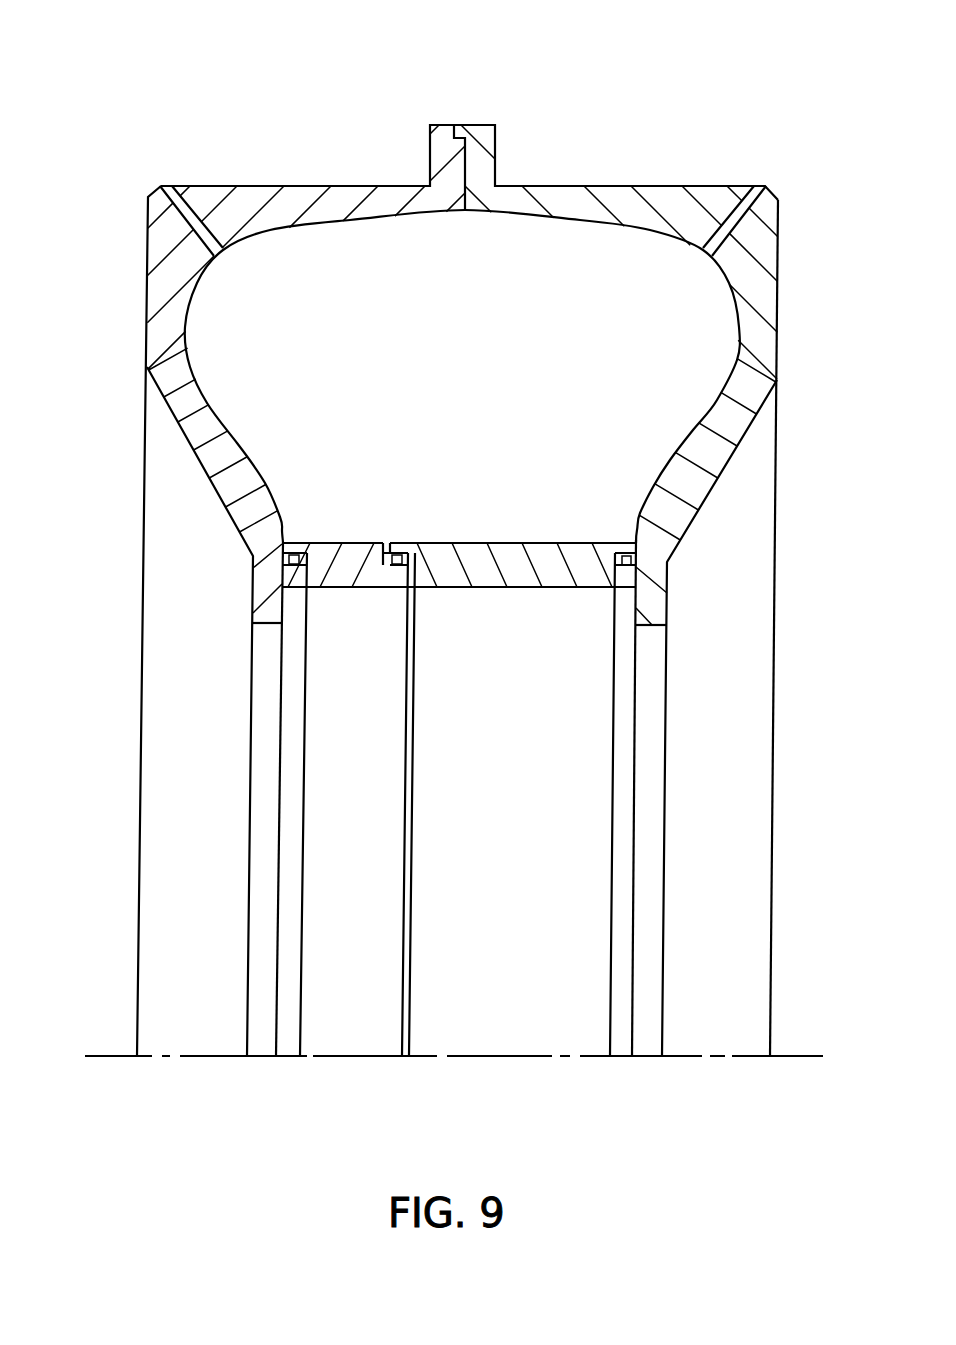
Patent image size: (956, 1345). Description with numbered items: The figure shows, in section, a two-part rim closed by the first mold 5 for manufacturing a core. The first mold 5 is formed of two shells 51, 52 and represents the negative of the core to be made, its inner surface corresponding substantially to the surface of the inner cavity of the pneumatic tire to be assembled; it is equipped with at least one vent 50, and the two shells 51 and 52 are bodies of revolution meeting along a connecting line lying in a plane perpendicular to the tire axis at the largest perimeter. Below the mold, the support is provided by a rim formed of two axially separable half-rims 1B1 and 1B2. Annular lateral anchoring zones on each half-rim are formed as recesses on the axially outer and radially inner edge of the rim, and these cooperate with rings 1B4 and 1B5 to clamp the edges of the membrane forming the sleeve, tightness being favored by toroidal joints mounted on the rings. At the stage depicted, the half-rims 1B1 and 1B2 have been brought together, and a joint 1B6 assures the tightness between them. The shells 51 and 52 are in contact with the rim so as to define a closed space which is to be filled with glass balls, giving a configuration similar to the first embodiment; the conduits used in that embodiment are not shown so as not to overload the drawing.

The first mold 5 is at (514, 98).
The vent 50 is at (165, 193).
The shell 51 is at (158, 289).
The shell 52 is at (758, 293).
The half-rim 1B1 is at (363, 1040).
The half-rim 1B2 is at (517, 1033).
The ring 1B4 is at (292, 1042).
The ring 1B5 is at (622, 1040).
The joint 1B6 is at (400, 562).